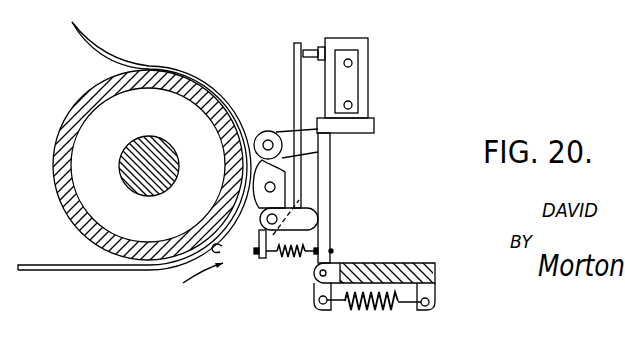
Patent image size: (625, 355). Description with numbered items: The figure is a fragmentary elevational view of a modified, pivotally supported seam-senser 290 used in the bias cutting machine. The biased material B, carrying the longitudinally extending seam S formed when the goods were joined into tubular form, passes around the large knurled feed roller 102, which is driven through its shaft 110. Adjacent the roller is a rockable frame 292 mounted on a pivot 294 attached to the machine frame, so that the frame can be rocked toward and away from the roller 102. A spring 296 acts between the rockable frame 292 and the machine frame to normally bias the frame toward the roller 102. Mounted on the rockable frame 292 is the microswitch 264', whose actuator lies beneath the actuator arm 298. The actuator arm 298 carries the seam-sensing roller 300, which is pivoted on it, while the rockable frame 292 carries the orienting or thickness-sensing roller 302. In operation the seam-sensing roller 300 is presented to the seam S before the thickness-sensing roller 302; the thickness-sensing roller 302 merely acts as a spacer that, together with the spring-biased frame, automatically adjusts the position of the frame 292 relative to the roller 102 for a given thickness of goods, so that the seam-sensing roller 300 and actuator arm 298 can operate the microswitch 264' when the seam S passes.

The biased material B is at (92, 40).
The feed roller 102 is at (160, 78).
The shaft 110 is at (152, 144).
The seam-senser 290 is at (412, 88).
The rockable frame 292 is at (332, 183).
The pivot 294 is at (318, 274).
The spring 296 is at (382, 300).
The actuator arm 298 is at (296, 43).
The seam-sensing roller 300 is at (253, 186).
The thickness-sensing roller 302 is at (264, 131).
The microswitch 264' is at (358, 78).
The seam S is at (225, 251).